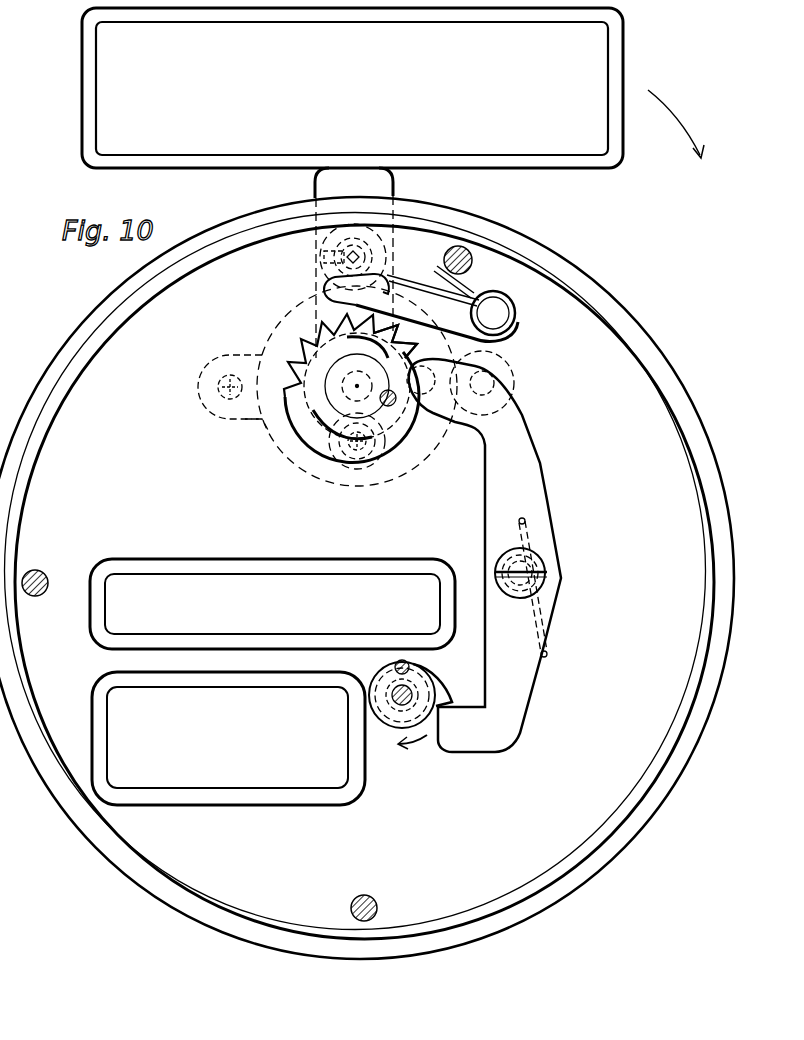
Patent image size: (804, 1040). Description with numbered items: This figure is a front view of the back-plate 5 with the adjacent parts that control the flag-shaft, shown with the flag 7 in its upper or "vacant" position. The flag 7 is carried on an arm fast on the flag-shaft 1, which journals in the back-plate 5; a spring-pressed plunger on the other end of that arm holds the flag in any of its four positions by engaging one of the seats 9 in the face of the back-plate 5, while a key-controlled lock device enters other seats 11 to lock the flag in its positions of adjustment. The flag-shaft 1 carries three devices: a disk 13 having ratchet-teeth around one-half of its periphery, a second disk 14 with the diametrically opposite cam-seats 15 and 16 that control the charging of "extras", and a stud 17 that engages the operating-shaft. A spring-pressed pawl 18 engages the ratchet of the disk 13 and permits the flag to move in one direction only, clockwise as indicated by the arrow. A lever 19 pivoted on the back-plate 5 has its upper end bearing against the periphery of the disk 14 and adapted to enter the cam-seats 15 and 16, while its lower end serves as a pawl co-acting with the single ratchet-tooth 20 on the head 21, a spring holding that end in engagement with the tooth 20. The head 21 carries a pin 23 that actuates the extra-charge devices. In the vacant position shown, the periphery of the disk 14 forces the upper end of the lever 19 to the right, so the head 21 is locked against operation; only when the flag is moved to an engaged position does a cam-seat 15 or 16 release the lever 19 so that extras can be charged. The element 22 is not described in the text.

The flag-shaft 1 is at (284, 440).
The back-plate 5 is at (686, 746).
The flag 7 is at (90, 101).
The seats 9 is at (357, 455).
The seats 11 is at (218, 389).
The disk having a half-ratchet 13 is at (293, 355).
The second disk 14 is at (268, 425).
The cam-seat 15 is at (414, 362).
The cam-seat 16 is at (334, 408).
The stud 17 is at (406, 407).
The spring-pressed pawl 18 is at (428, 288).
The lever 19 is at (532, 471).
The single ratchet-tooth 20 is at (444, 693).
The head 21 is at (377, 728).
The connecting rod 22 is at (543, 632).
The pin 23 is at (409, 666).